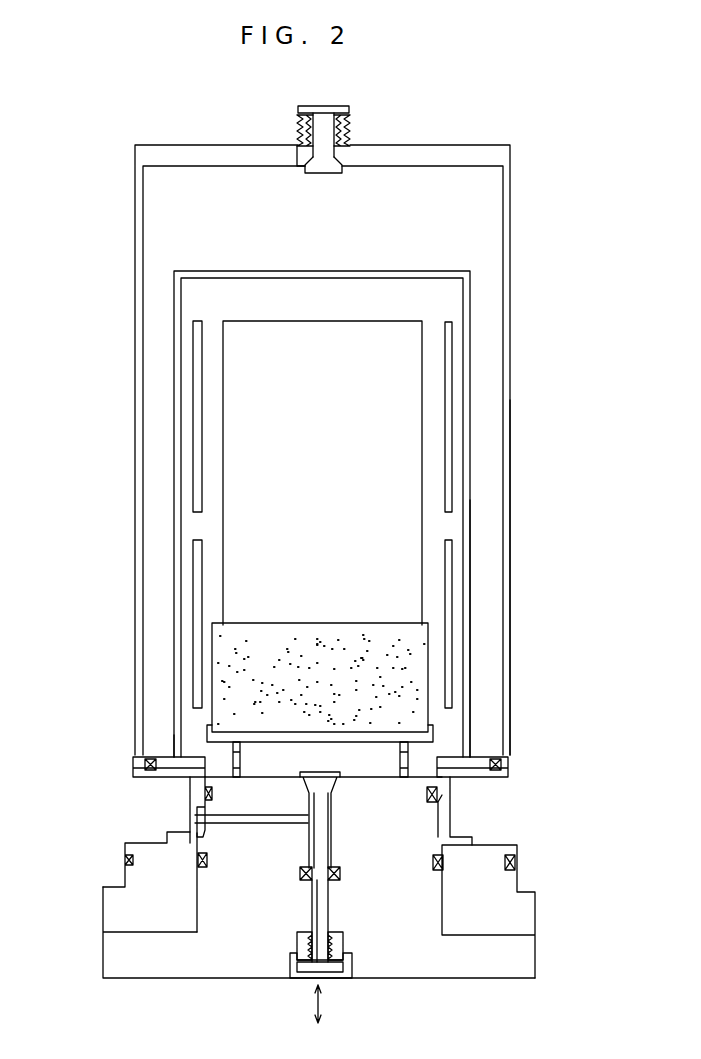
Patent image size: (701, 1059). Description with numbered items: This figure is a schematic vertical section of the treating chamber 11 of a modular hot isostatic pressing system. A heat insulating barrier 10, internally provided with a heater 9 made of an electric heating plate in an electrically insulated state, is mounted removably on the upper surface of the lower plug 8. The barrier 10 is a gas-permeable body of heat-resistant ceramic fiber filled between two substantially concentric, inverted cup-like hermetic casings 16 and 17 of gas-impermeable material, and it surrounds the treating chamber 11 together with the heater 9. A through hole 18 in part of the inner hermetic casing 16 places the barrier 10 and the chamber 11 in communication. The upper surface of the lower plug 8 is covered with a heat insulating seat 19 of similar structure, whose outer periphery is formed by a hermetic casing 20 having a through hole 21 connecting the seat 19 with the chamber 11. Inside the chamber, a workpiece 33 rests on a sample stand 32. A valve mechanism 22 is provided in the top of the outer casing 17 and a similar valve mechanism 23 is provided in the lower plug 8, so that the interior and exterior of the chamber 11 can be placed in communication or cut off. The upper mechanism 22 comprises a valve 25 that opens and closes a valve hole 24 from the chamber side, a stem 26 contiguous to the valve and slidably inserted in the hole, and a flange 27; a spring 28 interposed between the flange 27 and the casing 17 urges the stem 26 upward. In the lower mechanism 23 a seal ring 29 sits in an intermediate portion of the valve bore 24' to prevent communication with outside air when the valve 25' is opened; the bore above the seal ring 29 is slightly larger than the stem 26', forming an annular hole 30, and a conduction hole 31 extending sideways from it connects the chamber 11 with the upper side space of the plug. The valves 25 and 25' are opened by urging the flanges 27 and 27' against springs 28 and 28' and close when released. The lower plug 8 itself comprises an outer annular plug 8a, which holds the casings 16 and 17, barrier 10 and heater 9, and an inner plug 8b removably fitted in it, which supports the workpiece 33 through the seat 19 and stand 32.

The lower plug 8 is at (197, 935).
The outer annular plug 8a is at (537, 918).
The inner plug 8b is at (537, 965).
The heater 9 is at (455, 440).
The heat insulating barrier 10 is at (493, 363).
The treating chamber 11 is at (427, 300).
The hermetic casing 16 is at (470, 605).
The hermetic casing 17 is at (510, 660).
The through hole 18 is at (173, 735).
The heat insulating seat 19 is at (292, 752).
The hermetic casing 20 is at (410, 765).
The through hole 21 is at (232, 761).
The valve mechanism 22 is at (348, 117).
The valve mechanism 23 is at (333, 838).
The valve hole 24 is at (270, 140).
The valve bore 24' is at (176, 926).
The valve 25 is at (386, 144).
The valve 25' is at (178, 840).
The stem 26 is at (278, 118).
The stem 26' is at (274, 961).
The flange 27 is at (323, 90).
The flange 27' is at (335, 988).
The spring 28 is at (388, 118).
The spring 28' is at (312, 977).
The seal ring 29 is at (340, 882).
The annular hole 30 is at (307, 847).
The conduction hole 31 is at (195, 820).
The sample stand 32 is at (410, 695).
The workpiece 33 is at (425, 525).